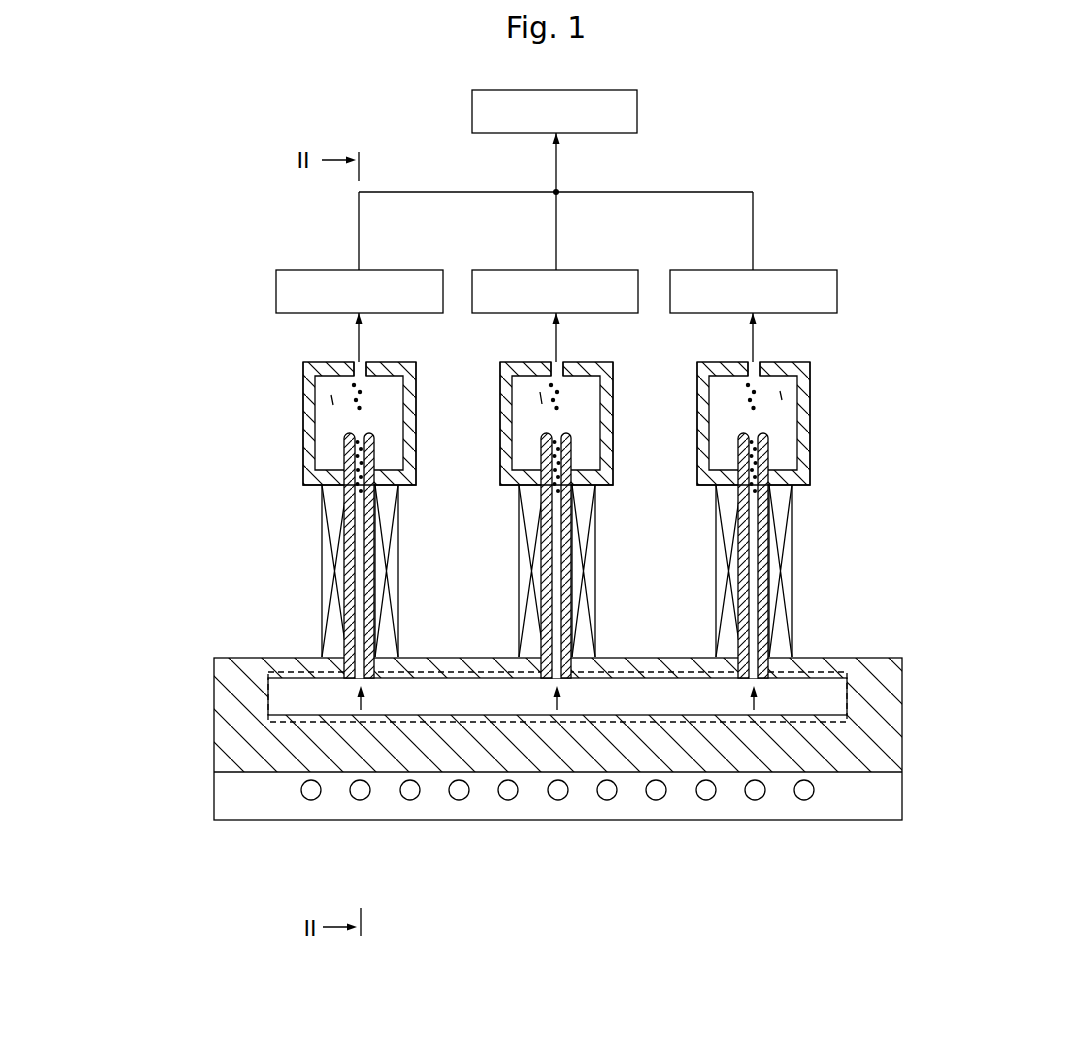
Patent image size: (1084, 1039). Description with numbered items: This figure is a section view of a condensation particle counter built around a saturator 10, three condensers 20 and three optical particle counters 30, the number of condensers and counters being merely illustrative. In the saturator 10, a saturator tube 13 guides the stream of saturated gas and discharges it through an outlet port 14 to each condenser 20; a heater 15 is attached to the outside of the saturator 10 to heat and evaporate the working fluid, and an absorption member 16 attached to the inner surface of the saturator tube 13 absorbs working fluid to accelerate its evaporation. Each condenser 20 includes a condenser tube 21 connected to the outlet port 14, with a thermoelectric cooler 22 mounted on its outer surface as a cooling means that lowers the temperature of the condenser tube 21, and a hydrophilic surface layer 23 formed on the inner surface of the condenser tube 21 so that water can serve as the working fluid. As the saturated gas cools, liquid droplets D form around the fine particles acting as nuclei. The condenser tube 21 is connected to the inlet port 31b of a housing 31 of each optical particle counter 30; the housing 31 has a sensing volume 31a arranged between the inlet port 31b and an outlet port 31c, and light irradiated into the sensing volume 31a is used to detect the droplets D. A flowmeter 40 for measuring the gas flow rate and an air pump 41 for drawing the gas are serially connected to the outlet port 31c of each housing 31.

The saturator 10 is at (207, 773).
The saturator tube 13 is at (437, 760).
The outlet port 14 is at (358, 680).
The heater 15 is at (507, 800).
The absorption member 16 is at (652, 722).
The condenser 20 is at (313, 552).
The condenser tube 21 is at (372, 520).
The thermoelectric cooler 22 is at (390, 630).
The hydrophilic surface layer 23 is at (353, 588).
The optical particle counter 30 is at (296, 433).
The housing 31 is at (308, 455).
The sensing volume 31a is at (331, 395).
The inlet port 31b is at (345, 489).
The outlet port 31c is at (352, 358).
The flowmeter 40 is at (395, 268).
The air pump 41 is at (472, 110).
The liquid droplets D is at (556, 410).